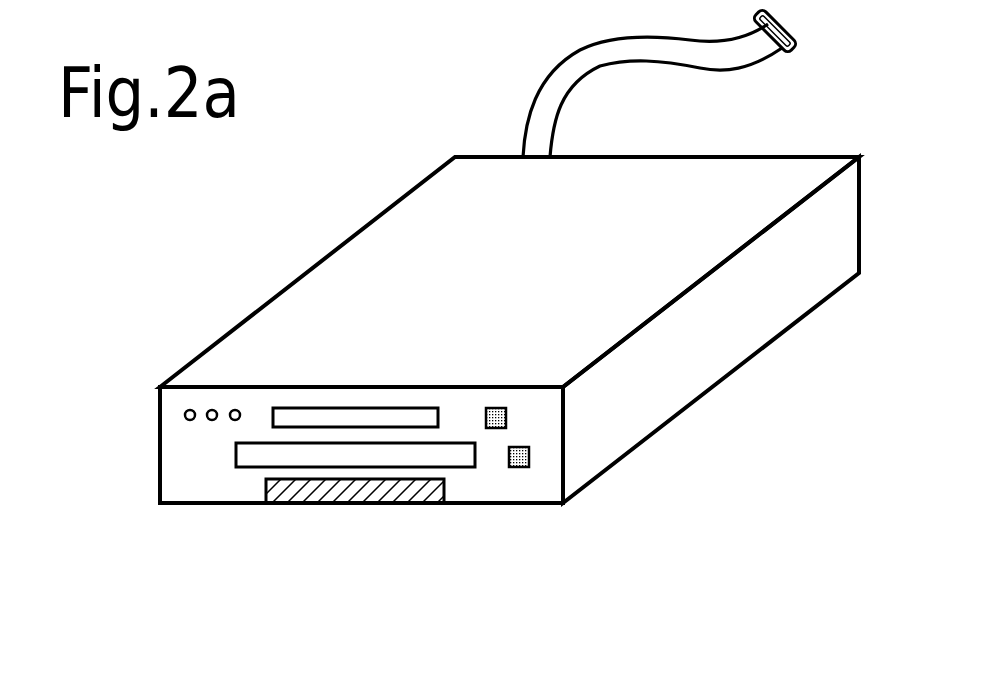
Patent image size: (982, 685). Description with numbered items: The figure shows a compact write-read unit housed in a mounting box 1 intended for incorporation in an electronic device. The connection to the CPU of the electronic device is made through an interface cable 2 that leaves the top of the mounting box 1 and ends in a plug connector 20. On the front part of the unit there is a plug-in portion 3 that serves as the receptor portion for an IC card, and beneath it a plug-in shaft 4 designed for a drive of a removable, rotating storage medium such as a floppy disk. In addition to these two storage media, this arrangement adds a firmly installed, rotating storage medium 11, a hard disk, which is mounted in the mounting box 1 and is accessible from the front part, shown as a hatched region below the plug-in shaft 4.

The mounting box 1 is at (720, 342).
The interface cable 2 is at (567, 68).
The plug connector 20 is at (793, 50).
The plug-in portion 3 is at (418, 418).
The plug-in shaft 4 is at (455, 455).
The firmly installed rotating storage medium 11 is at (283, 502).